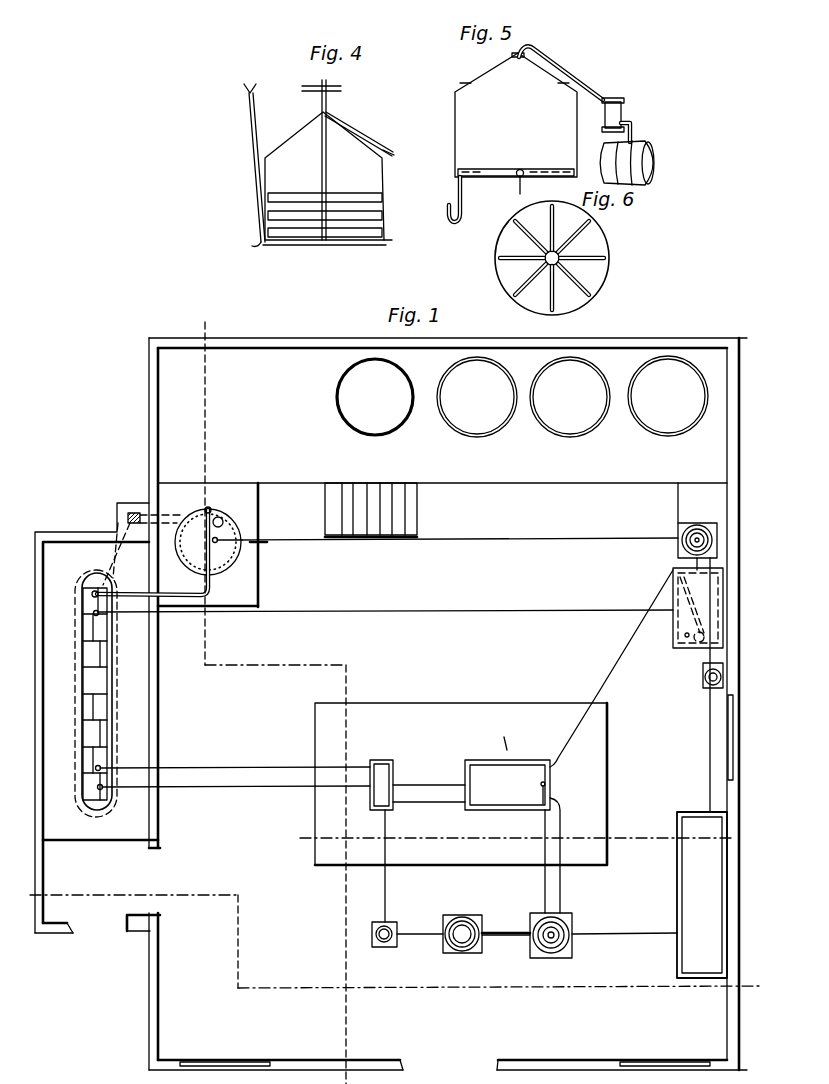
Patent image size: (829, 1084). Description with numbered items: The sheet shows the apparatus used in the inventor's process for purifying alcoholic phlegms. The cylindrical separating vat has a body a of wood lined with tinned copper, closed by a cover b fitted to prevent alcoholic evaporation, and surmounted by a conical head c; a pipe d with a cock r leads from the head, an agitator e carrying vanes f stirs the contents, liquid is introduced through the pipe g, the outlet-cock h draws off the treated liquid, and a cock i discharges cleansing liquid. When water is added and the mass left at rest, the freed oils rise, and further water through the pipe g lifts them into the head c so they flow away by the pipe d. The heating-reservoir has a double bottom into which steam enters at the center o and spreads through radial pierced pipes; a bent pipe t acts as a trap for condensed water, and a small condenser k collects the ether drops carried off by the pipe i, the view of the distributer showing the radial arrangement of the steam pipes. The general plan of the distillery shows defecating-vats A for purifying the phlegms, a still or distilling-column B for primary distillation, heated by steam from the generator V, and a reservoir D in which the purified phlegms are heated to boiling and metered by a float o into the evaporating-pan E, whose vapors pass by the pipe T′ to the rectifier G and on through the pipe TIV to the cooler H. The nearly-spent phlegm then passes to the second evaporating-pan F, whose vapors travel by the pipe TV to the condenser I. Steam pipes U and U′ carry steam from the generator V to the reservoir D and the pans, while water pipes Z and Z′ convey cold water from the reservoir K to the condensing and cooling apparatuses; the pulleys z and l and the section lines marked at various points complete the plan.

In FIG. 1, the defecating-vats A is at (522, 396).
In FIG. 1, the still or distilling-column B is at (169, 551).
In FIG. 1, the reservoir for the phlegms D is at (698, 608).
In FIG. 1, the evaporating-pan E is at (507, 785).
In FIG. 1, the evaporating-pan F is at (381, 785).
In FIG. 1, the concentrator and rectifier G is at (551, 934).
In FIG. 1, the cooler H is at (462, 925).
In FIG. 1, the condenser and cooler I is at (384, 926).
In FIG. 1, the small condenser K is at (702, 895).
In FIG. 1, the steam generator V is at (96, 693).
In FIG. 1, the steam pipe U is at (385, 606).
In FIG. 1, the steam pipe U′ is at (283, 777).
In FIG. 1, the vapor pipe T′ is at (538, 861).
In FIG. 1, the vapor pipe TIV is at (506, 926).
In FIG. 1, the vapor pipe TV is at (393, 866).
In FIG. 1, the water pipe Z is at (703, 685).
In FIG. 1, the water pipe Z′ is at (624, 926).
In FIG. 5, the vapor pipe / bent trap pipe t is at (460, 199).
In FIG. 1, the vapor pipe / bent trap pipe t is at (460, 531).
In FIG. 1, the pulley z is at (697, 546).
In FIG. 1, the pulley l is at (713, 675).
In FIG. 4, the inlet pipe g is at (254, 163).
In FIG. 1, the inlet pipe g is at (211, 488).
In FIG. 4, the outlet-cock h is at (390, 231).
In FIG. 1, the outlet-cock h is at (271, 667).
In FIG. 4, the cleansing cock / condenser pipe i is at (253, 247).
In FIG. 5, the cleansing cock / condenser pipe i is at (561, 73).
In FIG. 1, the cleansing cock / condenser pipe i is at (340, 868).
In FIG. 4, the body of the vat a is at (324, 178).
In FIG. 1, the body of the vat a is at (128, 893).
In FIG. 4, the cover b is at (292, 131).
In FIG. 1, the cover b is at (244, 934).
In FIG. 4, the conical head c is at (321, 160).
In FIG. 1, the conical head c is at (492, 989).
In FIG. 4, the oil pipe d is at (359, 133).
In FIG. 1, the oil pipe d is at (756, 986).
In FIG. 4, the agitator e is at (333, 177).
In FIG. 4, the vanes f is at (325, 218).
In FIG. 4, the cock r is at (388, 142).
In FIG. 5, the condenser k is at (627, 141).
In FIG. 5, the steam center / float o is at (516, 173).